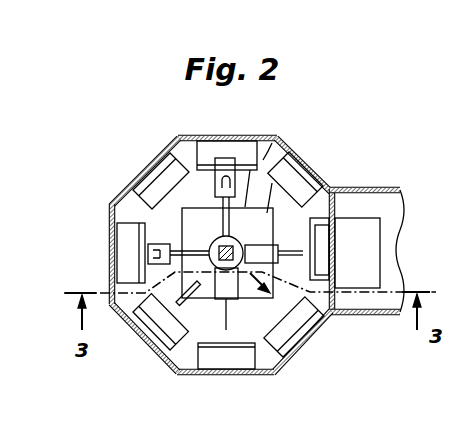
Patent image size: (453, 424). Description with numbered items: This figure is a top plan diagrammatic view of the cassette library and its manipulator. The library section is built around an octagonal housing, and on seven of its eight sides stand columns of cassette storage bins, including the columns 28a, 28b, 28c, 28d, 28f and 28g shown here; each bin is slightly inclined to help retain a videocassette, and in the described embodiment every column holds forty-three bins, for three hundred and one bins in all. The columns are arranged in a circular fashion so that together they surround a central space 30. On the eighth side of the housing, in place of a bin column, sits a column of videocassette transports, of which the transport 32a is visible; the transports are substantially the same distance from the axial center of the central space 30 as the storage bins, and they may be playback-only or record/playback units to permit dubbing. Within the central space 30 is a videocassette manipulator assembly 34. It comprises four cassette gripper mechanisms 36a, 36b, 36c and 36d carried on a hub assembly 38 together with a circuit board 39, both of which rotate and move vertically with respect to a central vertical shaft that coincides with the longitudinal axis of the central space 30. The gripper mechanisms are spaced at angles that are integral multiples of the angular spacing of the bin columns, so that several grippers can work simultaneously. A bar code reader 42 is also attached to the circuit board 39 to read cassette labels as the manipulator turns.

The column of cassette storage bins 28a is at (284, 371).
The column of cassette storage bins 28b is at (177, 373).
The column of cassette storage bins 28c is at (196, 136).
The column of cassette storage bins 28d is at (112, 222).
The column of cassette storage bins 28f is at (277, 137).
The column of cassette storage bins 28g is at (344, 189).
The central space 30 is at (238, 327).
The videocassette transport 32a is at (380, 240).
The videocassette manipulator assembly 34 is at (312, 296).
The cassette gripper mechanism 36a is at (288, 172).
The cassette gripper mechanism 36b is at (299, 333).
The cassette gripper mechanism 36c is at (145, 247).
The cassette gripper mechanism 36d is at (168, 160).
The hub assembly 38 is at (214, 191).
The circuit board 39 is at (243, 138).
The bar code reader 42 is at (191, 298).